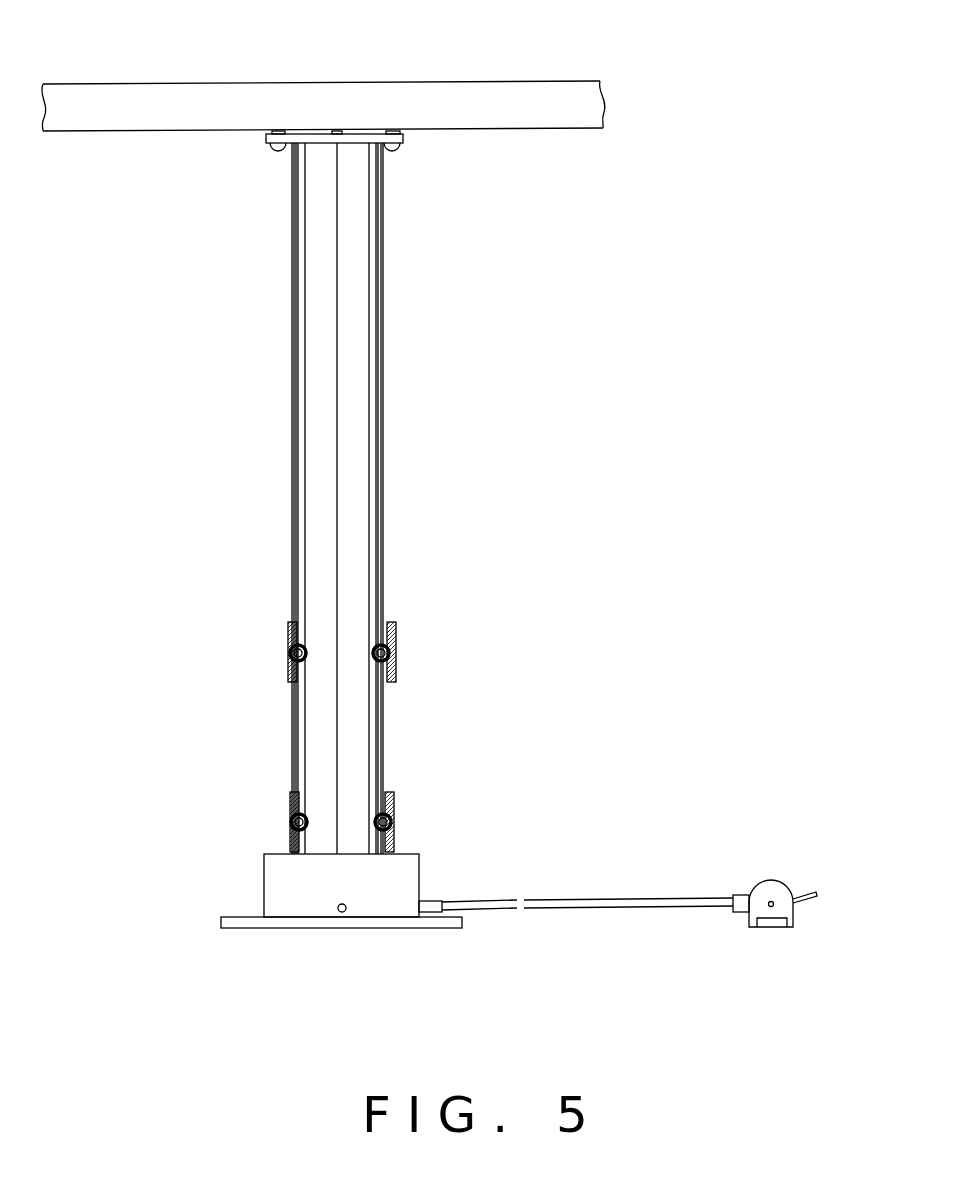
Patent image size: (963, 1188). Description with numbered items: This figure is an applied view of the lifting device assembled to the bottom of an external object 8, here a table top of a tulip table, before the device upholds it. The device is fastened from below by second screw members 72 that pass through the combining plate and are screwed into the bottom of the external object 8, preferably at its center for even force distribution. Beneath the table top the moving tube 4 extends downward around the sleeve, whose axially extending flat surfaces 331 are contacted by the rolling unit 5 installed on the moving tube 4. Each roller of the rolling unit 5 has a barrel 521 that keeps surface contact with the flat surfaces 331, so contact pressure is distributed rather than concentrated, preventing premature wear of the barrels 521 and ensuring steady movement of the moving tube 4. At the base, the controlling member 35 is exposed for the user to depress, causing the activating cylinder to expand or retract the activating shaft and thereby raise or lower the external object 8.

The external object 8 is at (503, 80).
The second screw member 72 is at (278, 151).
The flat surface 331 is at (305, 527).
The moving tube 4 is at (390, 759).
The barrel 521 is at (300, 638).
The rolling unit 5 is at (278, 661).
The controlling member 35 is at (779, 872).